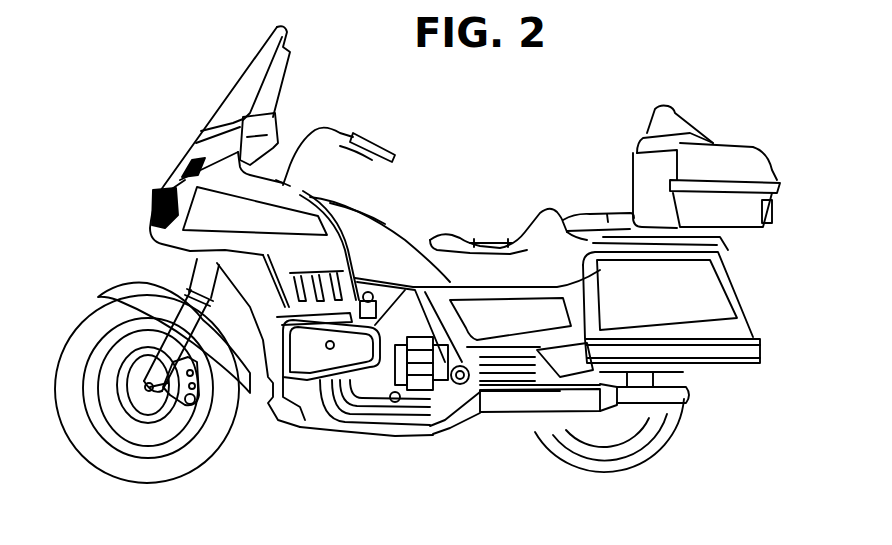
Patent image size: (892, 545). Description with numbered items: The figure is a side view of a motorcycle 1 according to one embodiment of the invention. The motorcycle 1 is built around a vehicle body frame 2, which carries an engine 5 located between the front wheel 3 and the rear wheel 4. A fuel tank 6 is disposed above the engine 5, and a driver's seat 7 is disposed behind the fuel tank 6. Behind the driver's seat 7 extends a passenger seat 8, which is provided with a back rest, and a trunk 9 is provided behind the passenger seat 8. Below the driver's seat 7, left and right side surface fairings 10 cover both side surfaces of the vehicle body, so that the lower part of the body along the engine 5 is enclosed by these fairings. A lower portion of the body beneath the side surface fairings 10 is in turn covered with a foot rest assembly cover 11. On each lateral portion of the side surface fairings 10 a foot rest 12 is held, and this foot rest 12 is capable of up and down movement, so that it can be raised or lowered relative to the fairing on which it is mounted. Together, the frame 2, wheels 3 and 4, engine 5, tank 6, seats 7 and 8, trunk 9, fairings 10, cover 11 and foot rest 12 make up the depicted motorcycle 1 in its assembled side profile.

The motorcycle 1 is at (506, 184).
The vehicle body frame 2 is at (447, 427).
The front wheel 3 is at (233, 438).
The rear wheel 4 is at (678, 420).
The engine 5 is at (313, 413).
The fuel tank 6 is at (377, 230).
The driver's seat 7 is at (487, 247).
The passenger seat 8 is at (590, 223).
The trunk 9 is at (707, 130).
The side surface fairing 10 is at (505, 332).
The foot rest assembly cover 11 is at (478, 420).
The foot rest 12 is at (500, 413).